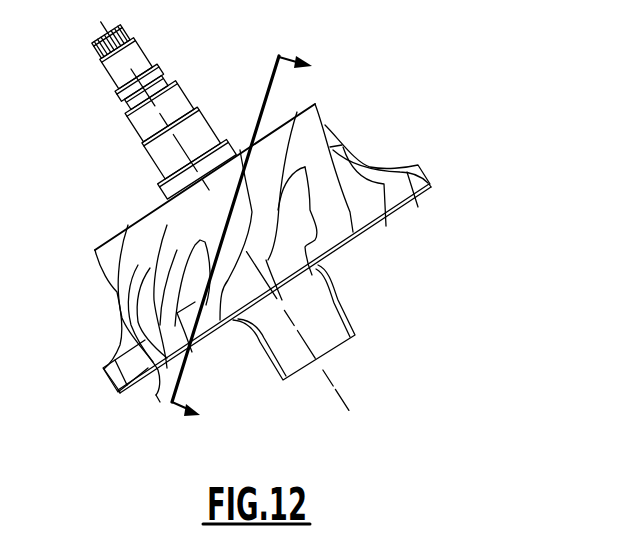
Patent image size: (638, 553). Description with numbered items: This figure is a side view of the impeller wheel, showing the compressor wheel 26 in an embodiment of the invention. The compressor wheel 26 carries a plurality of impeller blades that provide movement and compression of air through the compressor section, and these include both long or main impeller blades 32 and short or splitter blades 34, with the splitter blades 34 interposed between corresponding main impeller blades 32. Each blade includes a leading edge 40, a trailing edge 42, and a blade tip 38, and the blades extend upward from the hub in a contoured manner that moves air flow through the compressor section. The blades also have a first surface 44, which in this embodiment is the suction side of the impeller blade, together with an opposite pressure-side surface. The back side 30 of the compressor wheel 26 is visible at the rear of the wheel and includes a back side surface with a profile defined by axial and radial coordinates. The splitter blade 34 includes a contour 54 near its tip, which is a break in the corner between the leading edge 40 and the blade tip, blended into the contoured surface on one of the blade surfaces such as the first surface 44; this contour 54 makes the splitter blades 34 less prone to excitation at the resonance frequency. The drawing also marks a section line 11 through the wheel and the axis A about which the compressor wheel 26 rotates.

The compressor wheel 26 is at (422, 86).
The back side 30 is at (400, 221).
The main impeller blades 32 is at (178, 232).
The splitter blades 34 is at (233, 305).
The blade tip 38 is at (153, 307).
The leading edge 40 is at (201, 235).
The trailing edge 42 is at (112, 388).
The first surface 44 is at (158, 395).
The contour 54 is at (158, 256).
The section line 11- 11 is at (255, 241).
The rotation axis A is at (337, 381).